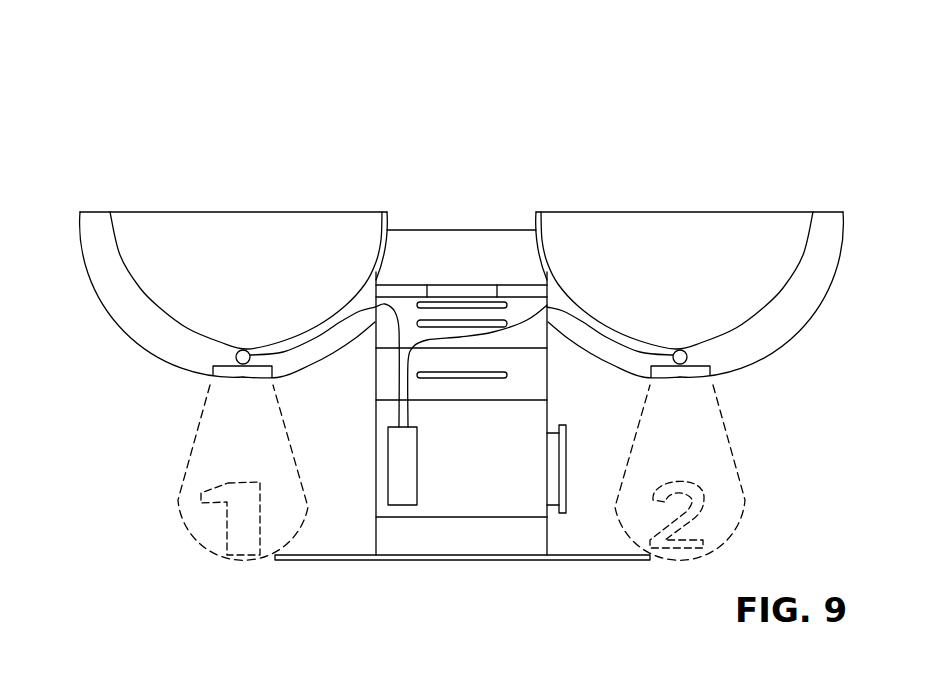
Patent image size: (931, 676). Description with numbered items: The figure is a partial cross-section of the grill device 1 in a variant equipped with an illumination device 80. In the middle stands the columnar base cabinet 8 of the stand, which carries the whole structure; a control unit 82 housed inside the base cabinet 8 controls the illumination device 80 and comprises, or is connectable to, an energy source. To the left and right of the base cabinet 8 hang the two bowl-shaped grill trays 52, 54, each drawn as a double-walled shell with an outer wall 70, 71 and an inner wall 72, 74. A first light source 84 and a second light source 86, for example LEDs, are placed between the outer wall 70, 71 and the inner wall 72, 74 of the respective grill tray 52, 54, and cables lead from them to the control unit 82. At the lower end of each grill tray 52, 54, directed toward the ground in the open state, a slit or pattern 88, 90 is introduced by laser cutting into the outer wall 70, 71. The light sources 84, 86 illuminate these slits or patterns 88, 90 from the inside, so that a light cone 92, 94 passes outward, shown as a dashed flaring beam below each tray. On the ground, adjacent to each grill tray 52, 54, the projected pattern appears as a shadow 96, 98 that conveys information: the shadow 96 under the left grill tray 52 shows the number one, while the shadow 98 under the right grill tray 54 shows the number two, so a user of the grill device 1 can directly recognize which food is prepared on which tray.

The grill device 1 is at (300, 126).
The base cabinet 8 is at (560, 409).
The grill tray 52 is at (116, 346).
The grill tray 54 is at (807, 378).
The outer wall 70 is at (108, 312).
The outer wall 71 is at (806, 325).
The inner wall 72 is at (158, 305).
The inner wall 74 is at (616, 332).
The illumination device 80 is at (168, 461).
The control unit 82 is at (410, 488).
The first light source 84 is at (244, 349).
The second light source 86 is at (690, 351).
The slit or pattern 88 is at (248, 378).
The slit or pattern 90 is at (678, 378).
The light cone 92 is at (178, 493).
The light cone 94 is at (741, 483).
The shadow 96 is at (240, 545).
The shadow 98 is at (700, 542).